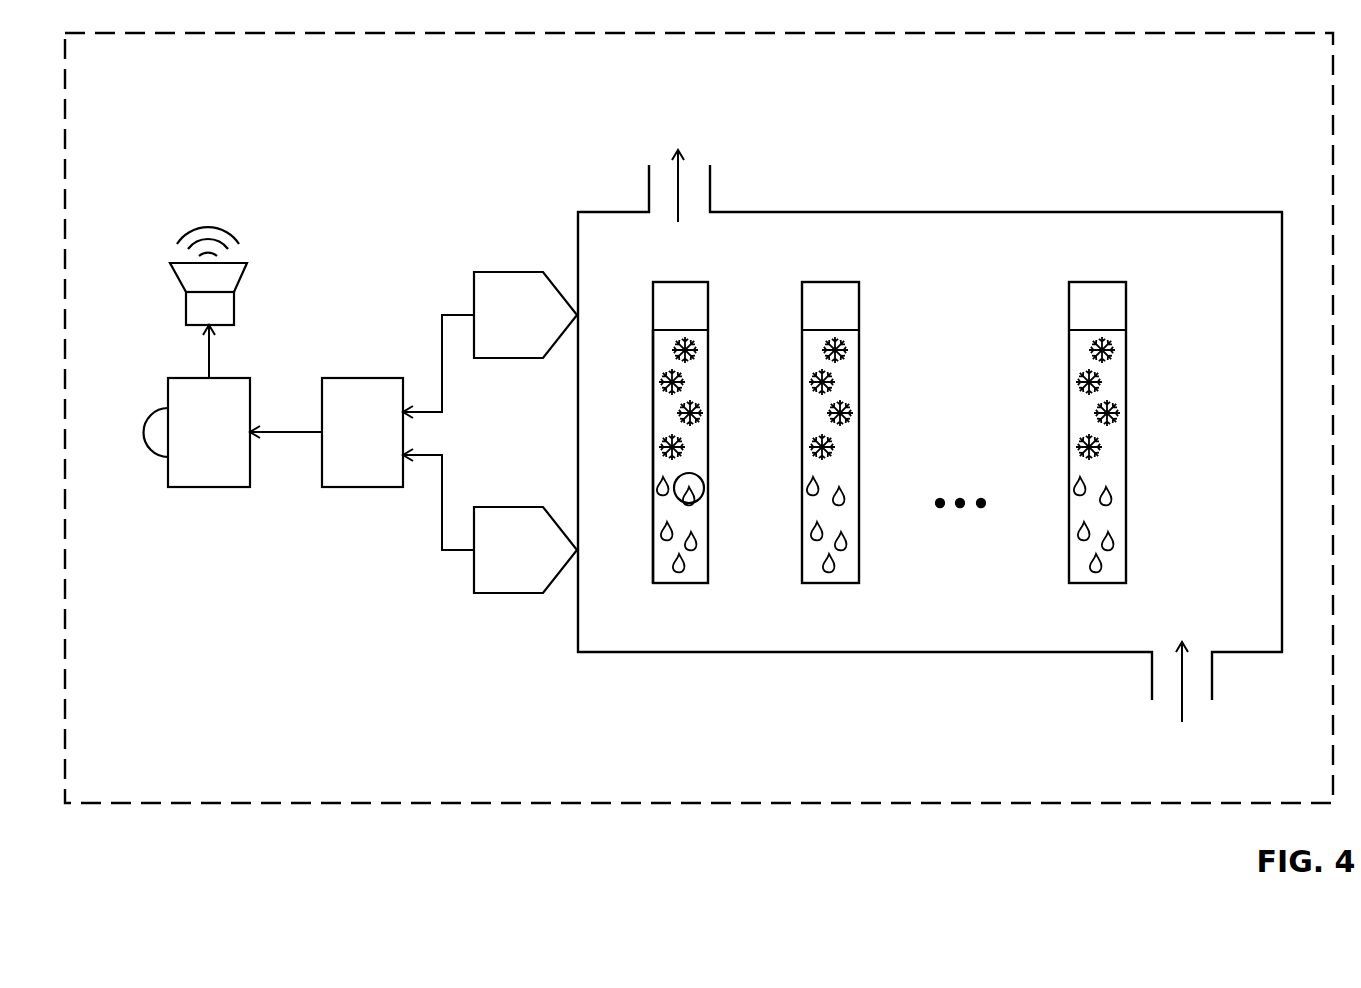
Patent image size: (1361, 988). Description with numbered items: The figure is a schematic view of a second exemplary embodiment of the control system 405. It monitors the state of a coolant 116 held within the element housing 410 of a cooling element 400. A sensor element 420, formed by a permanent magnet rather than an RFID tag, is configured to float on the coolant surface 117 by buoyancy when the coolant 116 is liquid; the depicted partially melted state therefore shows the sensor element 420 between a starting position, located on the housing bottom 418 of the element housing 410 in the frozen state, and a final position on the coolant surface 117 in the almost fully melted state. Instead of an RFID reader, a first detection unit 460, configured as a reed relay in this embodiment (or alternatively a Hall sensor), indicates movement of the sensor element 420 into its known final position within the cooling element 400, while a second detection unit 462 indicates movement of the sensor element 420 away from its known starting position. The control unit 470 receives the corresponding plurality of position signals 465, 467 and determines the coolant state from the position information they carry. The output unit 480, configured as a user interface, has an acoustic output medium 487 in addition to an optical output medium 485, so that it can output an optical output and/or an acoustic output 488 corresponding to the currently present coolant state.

The control system 405 is at (343, 193).
The acoustic output 488 is at (207, 217).
The acoustic output medium 487 is at (187, 305).
The optical output medium 485 is at (150, 447).
The output unit 480 is at (188, 448).
The control unit 470 is at (341, 448).
The position signal 465 is at (440, 363).
The position signal 467 is at (440, 502).
The first detection unit 460 is at (487, 331).
The second detection unit 462 is at (487, 566).
The cooling element 400 is at (642, 305).
The coolant surface 117 is at (678, 330).
The element housing 410 is at (708, 447).
The sensor element 420 is at (697, 492).
The coolant 116 is at (663, 570).
The housing bottom 418 is at (693, 583).